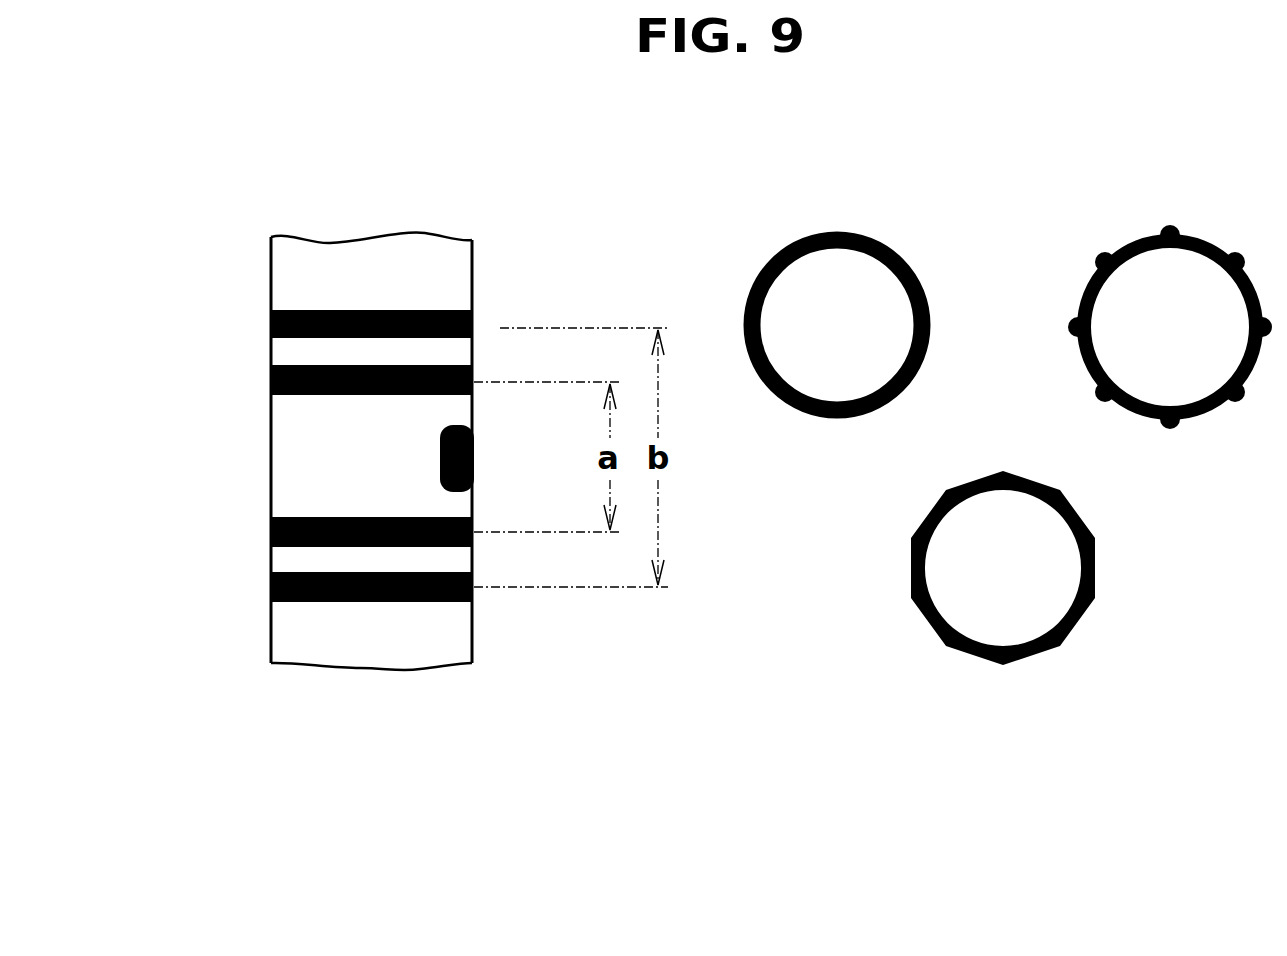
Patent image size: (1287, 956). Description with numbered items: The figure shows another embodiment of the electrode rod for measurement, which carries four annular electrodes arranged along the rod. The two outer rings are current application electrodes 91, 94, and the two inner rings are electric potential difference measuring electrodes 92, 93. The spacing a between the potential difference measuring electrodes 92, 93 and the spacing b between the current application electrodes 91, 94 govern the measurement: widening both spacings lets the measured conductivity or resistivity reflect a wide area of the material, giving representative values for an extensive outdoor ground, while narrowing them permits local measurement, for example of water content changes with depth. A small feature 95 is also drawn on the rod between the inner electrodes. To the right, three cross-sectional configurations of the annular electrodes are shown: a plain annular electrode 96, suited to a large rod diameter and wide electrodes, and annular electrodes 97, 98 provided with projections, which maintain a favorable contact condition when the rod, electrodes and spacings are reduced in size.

The current application electrode 91 is at (271, 327).
The electric potential difference measuring electrode 92 is at (271, 385).
The electric potential difference measuring electrode 93 is at (271, 534).
The current application electrode 94 is at (271, 588).
The marker protrusion 95 is at (474, 455).
The annular electrode 96 is at (838, 232).
The annular electrode 97 is at (1170, 228).
The annular electrode 98 is at (990, 660).